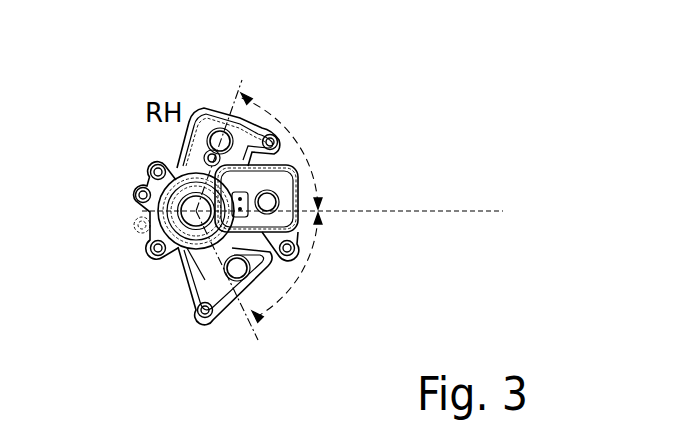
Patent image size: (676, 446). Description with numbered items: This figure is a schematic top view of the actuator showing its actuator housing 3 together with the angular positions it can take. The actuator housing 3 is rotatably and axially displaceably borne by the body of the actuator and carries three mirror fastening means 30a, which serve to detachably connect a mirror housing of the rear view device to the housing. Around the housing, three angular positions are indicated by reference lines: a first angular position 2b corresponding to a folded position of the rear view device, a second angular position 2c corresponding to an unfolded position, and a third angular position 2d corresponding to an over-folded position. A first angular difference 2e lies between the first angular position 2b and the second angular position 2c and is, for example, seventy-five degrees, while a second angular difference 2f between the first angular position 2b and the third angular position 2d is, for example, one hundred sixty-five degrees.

The actuator housing 3 is at (234, 213).
The mirror fastening means 30a is at (155, 168).
The first angular position 2b is at (253, 330).
The second angular position 2c is at (452, 210).
The third angular position 2d is at (245, 88).
The first angular difference 2e is at (295, 288).
The second angular difference 2f is at (322, 198).